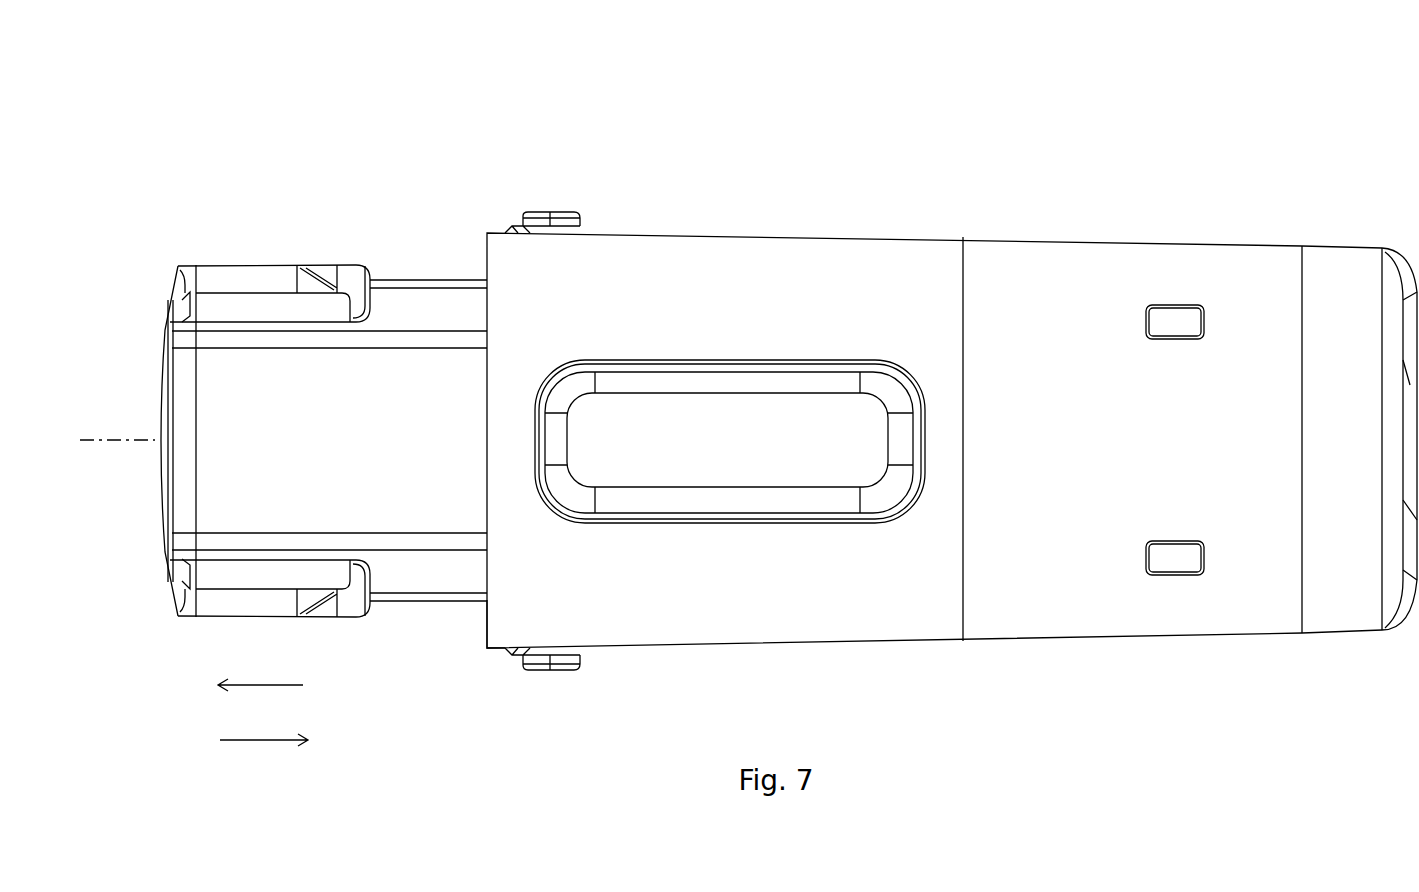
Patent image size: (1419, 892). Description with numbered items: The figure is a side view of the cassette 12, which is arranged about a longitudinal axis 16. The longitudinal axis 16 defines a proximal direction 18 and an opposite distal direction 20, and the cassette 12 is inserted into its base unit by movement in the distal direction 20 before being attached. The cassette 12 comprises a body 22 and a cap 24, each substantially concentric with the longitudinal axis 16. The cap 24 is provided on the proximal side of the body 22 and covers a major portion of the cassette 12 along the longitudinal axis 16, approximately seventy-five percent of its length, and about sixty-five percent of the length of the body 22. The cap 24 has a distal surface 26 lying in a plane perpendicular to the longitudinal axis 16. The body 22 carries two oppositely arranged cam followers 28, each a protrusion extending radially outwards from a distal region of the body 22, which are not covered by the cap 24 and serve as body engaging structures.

The cassette 12 is at (311, 127).
The longitudinal axis 16 is at (96, 440).
The proximal direction 18 is at (264, 725).
The distal direction 20 is at (260, 671).
The body 22 is at (359, 392).
The cap 24 is at (748, 288).
The distal surface 26 is at (486, 629).
The cam follower 28 is at (248, 278).